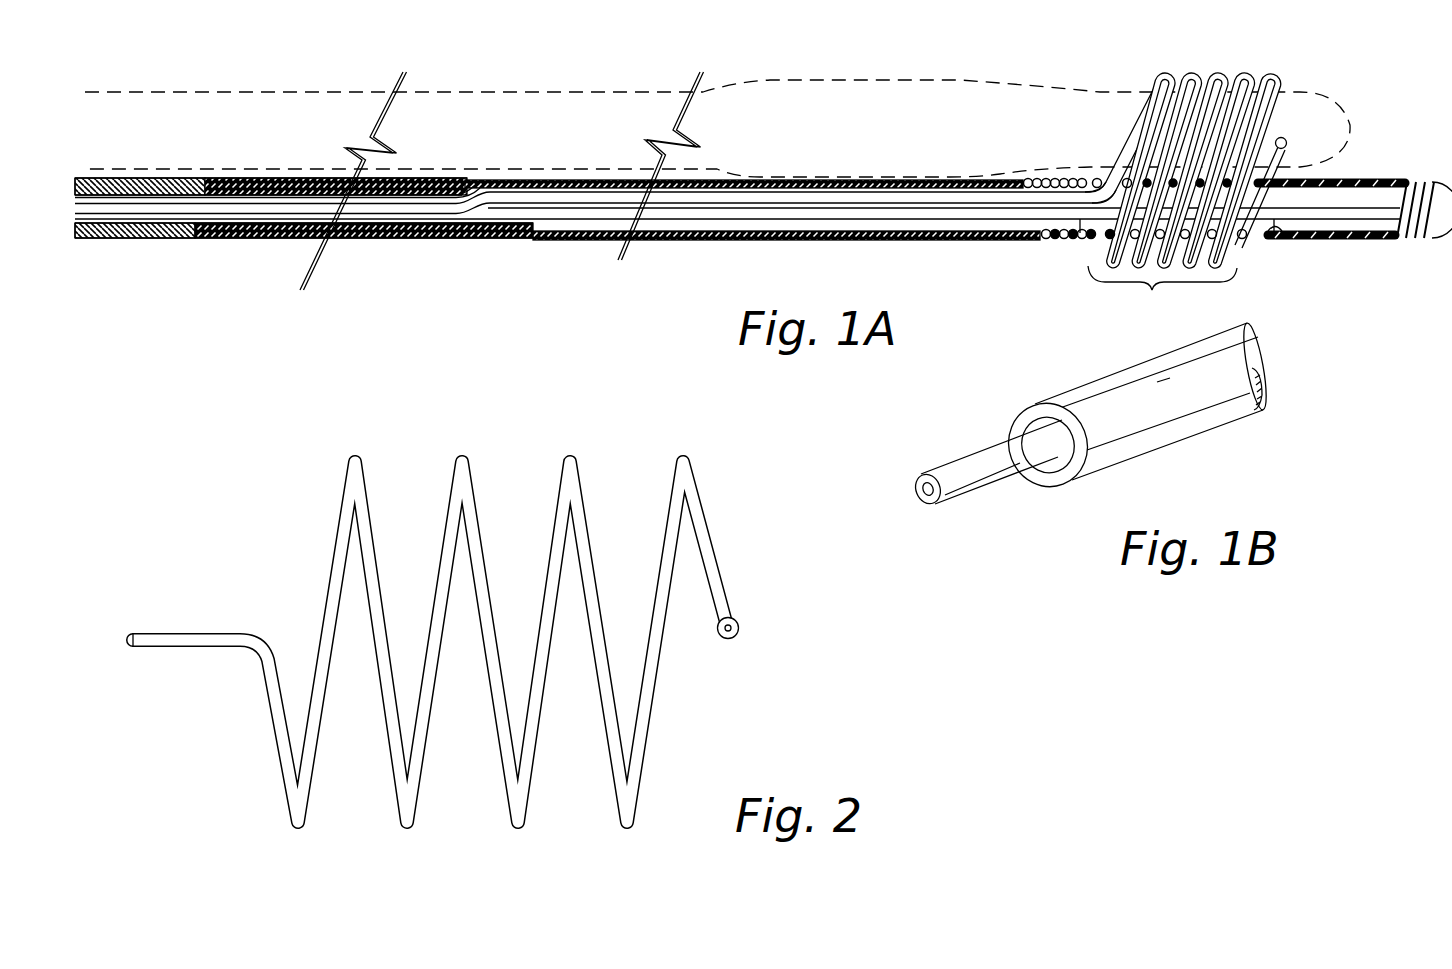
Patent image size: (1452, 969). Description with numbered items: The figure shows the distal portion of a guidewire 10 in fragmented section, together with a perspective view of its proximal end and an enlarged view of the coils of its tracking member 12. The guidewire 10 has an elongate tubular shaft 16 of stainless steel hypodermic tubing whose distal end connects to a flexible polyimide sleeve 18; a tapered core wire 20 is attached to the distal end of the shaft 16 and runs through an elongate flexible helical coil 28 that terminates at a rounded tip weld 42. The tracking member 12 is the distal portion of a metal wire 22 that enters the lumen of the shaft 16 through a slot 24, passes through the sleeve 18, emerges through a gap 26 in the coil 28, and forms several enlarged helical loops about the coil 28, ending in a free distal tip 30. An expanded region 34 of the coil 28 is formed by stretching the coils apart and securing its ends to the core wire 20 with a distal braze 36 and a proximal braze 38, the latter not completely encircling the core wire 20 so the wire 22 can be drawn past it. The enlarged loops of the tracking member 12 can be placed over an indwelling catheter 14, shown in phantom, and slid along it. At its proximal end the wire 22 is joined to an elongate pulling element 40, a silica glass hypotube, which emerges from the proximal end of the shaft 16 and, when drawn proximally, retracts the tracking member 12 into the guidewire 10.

In FIG. 1A, the guidewire 10 is at (442, 303).
In FIG. 1A, the tracking member 12 is at (1258, 63).
In FIG. 2, the tracking member 12 is at (468, 629).
In FIG. 1A, the catheter 14 is at (800, 80).
In FIG. 1A, the tubular shaft 16 is at (138, 240).
In FIG. 1B, the tubular shaft 16 is at (1180, 443).
In FIG. 1A, the sleeve 18 is at (670, 242).
In FIG. 1A, the core wire 20 is at (580, 220).
In FIG. 1A, the wire 22 is at (385, 216).
In FIG. 2, the wire 22 is at (200, 630).
In FIG. 1A, the slot 24 is at (472, 188).
In FIG. 1A, the gap 26 is at (1102, 168).
In FIG. 1A, the helical coil 28 is at (1345, 248).
In FIG. 1A, the distal tip 30 is at (1286, 140).
In FIG. 2, the distal tip 30 is at (740, 628).
In FIG. 1A, the expanded region 34 is at (1162, 295).
In FIG. 1A, the distal braze 36 is at (1292, 245).
In FIG. 1A, the proximal braze 38 is at (1078, 222).
In FIG. 1B, the proximal pulling element 40 is at (968, 483).
In FIG. 1A, the tip weld 42 is at (1443, 183).